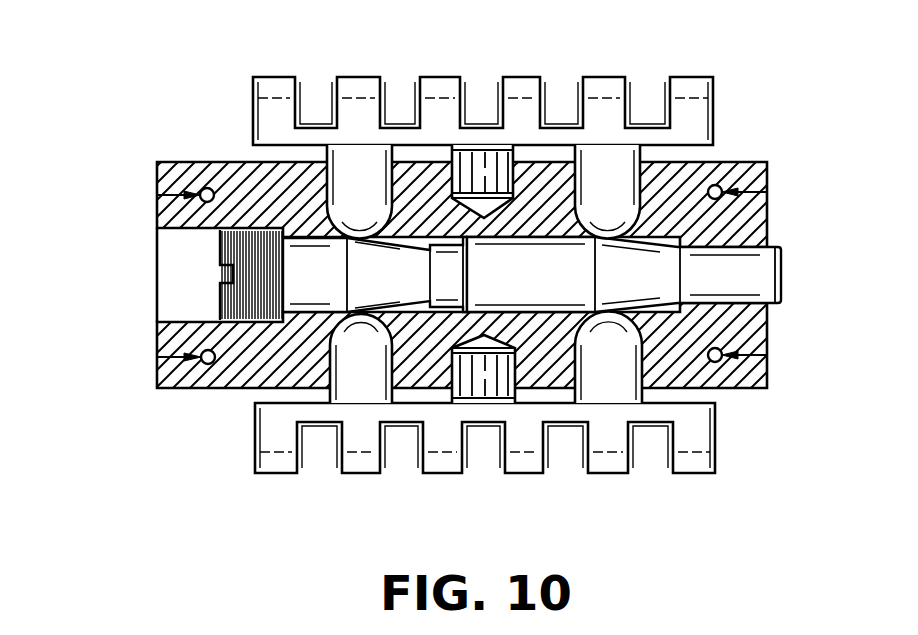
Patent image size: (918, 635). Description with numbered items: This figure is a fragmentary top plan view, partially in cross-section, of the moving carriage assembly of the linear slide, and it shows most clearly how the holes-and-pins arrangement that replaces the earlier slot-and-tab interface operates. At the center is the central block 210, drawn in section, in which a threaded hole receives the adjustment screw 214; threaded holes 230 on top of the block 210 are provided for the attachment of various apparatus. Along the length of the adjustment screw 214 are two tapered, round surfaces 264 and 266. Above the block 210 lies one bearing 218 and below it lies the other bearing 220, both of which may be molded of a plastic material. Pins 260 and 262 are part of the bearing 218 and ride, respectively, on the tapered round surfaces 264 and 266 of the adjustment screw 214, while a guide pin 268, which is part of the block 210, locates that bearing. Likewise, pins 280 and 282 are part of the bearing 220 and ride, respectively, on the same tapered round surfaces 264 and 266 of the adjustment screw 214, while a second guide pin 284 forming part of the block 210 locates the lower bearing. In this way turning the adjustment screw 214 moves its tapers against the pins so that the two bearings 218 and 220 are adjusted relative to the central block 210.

The central block 210 is at (240, 363).
The adjustment screw 214 is at (257, 227).
The bearing 218 is at (695, 116).
The bearing 220 is at (698, 433).
The threaded holes 230 is at (847, 293).
The pin 260 is at (362, 177).
The pin 262 is at (612, 175).
The tapered, round surface 264 is at (383, 290).
The tapered, round surface 266 is at (560, 288).
The guide pin 268 is at (485, 158).
The pin 280 is at (363, 375).
The pin 282 is at (613, 373).
The guide pin 284 is at (490, 388).